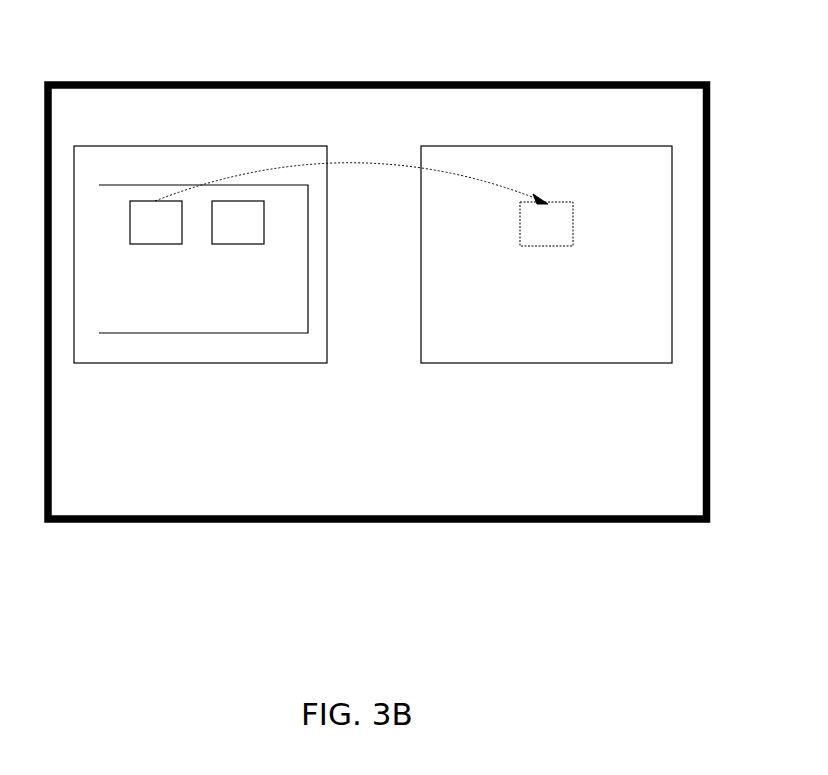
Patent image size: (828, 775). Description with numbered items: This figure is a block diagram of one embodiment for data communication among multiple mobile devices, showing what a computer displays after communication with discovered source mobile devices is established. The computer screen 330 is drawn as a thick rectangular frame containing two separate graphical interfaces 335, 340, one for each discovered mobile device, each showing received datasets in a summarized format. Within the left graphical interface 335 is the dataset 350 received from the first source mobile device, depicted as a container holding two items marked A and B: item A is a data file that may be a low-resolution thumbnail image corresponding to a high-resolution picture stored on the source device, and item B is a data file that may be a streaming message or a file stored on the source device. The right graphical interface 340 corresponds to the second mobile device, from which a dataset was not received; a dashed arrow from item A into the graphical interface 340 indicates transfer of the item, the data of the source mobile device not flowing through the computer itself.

The computer screen 330 is at (380, 338).
The graphical interface 335 is at (200, 254).
The graphical interface 340 is at (546, 254).
The dataset 350 is at (203, 259).